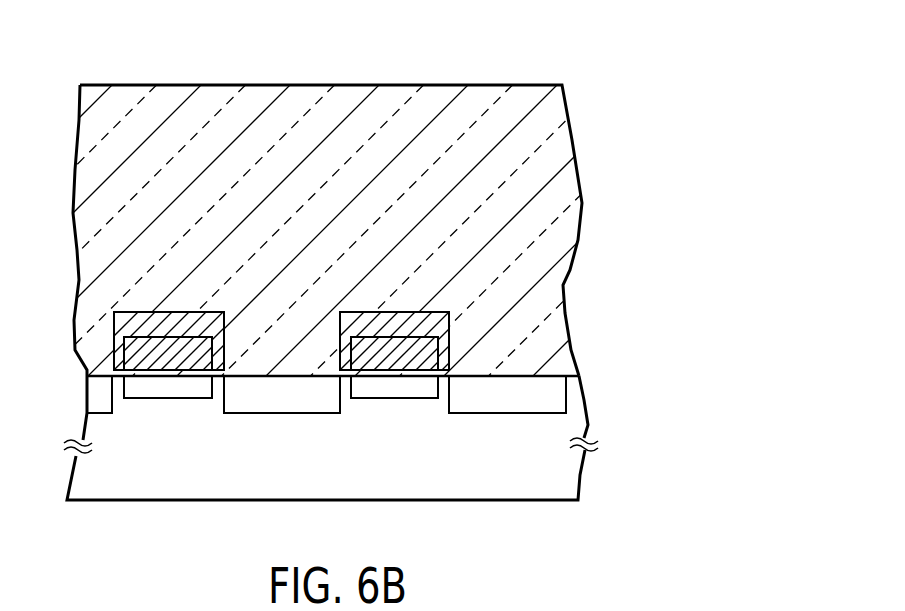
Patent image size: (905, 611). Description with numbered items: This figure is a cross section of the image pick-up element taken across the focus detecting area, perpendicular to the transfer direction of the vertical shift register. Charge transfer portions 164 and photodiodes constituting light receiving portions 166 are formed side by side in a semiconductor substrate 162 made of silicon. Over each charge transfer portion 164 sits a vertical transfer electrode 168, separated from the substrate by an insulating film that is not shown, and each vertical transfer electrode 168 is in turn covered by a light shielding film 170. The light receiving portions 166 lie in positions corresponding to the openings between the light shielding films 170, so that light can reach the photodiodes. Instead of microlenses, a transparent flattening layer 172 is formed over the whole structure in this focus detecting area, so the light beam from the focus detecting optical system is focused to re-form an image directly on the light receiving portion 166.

The semiconductor substrate 162 is at (567, 477).
The charge transfer portion 164 is at (394, 424).
The light receiving portion 166 is at (507, 436).
The vertical transfer electrode 168 is at (432, 353).
The light shielding film 170 is at (440, 323).
The transparent flattening layer 172 is at (553, 142).